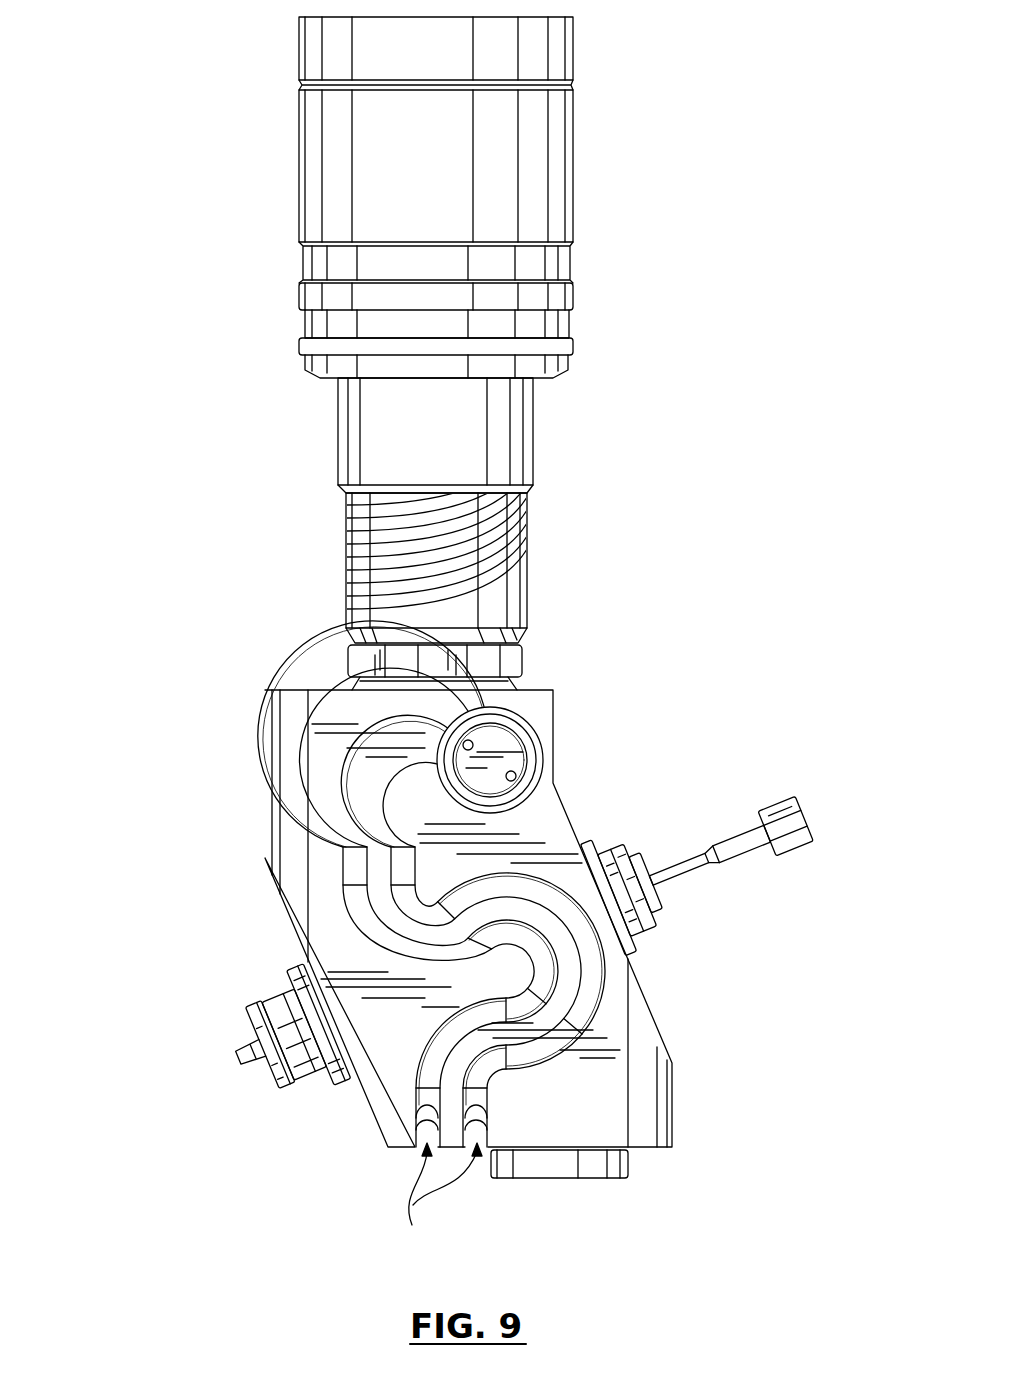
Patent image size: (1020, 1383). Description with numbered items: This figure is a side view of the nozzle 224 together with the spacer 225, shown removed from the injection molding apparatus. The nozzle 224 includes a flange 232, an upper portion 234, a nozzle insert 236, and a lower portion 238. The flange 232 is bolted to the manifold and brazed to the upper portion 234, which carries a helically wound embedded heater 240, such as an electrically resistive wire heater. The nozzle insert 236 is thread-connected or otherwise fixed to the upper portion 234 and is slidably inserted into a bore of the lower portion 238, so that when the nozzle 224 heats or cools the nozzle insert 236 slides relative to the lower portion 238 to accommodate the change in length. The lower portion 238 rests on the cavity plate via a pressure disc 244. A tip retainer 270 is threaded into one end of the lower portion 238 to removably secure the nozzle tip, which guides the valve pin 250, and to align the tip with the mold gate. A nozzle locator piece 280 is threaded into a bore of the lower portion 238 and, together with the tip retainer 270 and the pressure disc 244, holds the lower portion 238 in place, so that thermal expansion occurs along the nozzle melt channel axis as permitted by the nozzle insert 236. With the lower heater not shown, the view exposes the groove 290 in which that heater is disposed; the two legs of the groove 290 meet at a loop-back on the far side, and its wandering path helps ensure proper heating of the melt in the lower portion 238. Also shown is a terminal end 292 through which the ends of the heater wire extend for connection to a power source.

The nozzle 224 is at (692, 478).
The spacer 225 is at (575, 50).
The flange 232 is at (575, 132).
The upper portion 234 is at (517, 432).
The nozzle insert 236 is at (524, 668).
The lower portion 238 is at (277, 722).
The heater 240 is at (527, 550).
The pressure disc 244 is at (597, 1180).
The valve pin 250 is at (692, 878).
The tip retainer 270 is at (304, 1092).
The nozzle locator piece 280 is at (650, 937).
The groove 290 is at (433, 1203).
The terminal end 292 is at (543, 745).